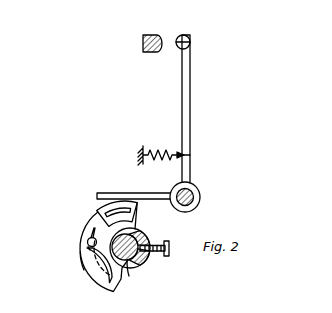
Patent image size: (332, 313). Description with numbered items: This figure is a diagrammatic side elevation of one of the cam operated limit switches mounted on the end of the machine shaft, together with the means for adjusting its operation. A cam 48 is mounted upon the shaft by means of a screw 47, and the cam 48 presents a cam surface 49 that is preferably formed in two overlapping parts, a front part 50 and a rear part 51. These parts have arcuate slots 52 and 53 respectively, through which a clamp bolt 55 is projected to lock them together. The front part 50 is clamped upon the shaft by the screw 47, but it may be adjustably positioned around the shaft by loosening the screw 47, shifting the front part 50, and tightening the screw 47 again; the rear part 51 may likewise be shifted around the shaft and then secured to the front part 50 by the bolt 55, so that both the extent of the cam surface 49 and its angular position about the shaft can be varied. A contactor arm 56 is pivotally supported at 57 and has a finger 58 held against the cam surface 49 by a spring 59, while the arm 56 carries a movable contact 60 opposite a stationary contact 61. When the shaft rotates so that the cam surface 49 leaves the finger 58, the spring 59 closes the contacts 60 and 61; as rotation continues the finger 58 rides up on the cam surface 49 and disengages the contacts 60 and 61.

The screw 47 is at (160, 254).
The cam 48 is at (86, 242).
The cam surface 49 is at (82, 262).
The front part 50 is at (105, 283).
The rear part 51 is at (138, 210).
The arcuate slot 52 is at (90, 273).
The arcuate slot 53 is at (100, 211).
The clamp bolt 55 is at (88, 244).
The contactor arm 56 is at (191, 126).
The pivot 57 is at (200, 192).
The finger 58 is at (129, 194).
The spring 59 is at (168, 164).
The movable contact 60 is at (190, 42).
The stationary contact 61 is at (160, 35).